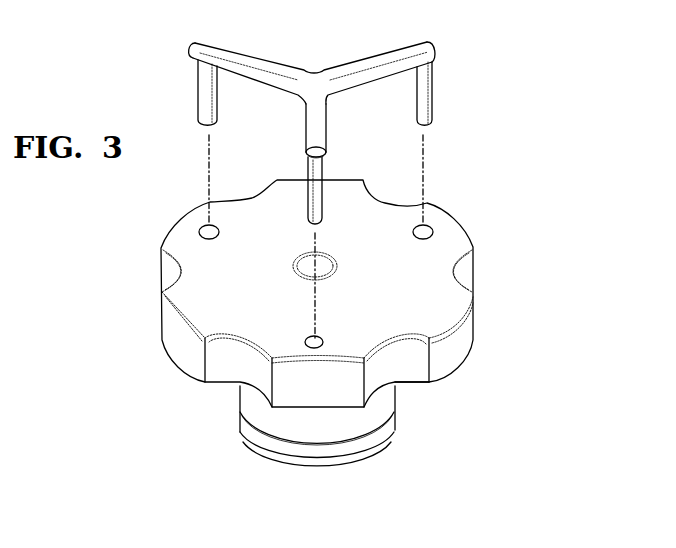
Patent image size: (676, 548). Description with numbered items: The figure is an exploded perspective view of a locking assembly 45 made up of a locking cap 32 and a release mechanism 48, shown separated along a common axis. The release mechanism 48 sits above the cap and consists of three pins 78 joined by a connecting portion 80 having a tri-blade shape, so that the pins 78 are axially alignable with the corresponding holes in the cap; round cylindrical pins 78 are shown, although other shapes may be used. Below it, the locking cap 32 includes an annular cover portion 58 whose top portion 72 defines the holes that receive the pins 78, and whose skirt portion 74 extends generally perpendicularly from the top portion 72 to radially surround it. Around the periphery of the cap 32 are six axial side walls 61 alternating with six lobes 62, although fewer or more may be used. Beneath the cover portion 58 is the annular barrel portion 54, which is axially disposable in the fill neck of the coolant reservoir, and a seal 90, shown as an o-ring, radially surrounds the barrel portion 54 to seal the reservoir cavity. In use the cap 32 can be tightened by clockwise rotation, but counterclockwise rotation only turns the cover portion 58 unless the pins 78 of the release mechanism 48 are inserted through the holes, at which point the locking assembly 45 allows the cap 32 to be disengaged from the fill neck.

The locking assembly 45 is at (470, 196).
The release mechanism 48 is at (227, 47).
The connecting portion 80 is at (288, 72).
The pins 78 is at (202, 104).
The annular cover portion 58 is at (188, 246).
The locking cap 32 is at (192, 298).
The top portion 72 is at (410, 299).
The skirt portion 74 is at (462, 348).
The axial side walls 61 is at (408, 373).
The annular barrel portion 54 is at (256, 411).
The lobes 62 is at (325, 397).
The seal 90 is at (281, 447).